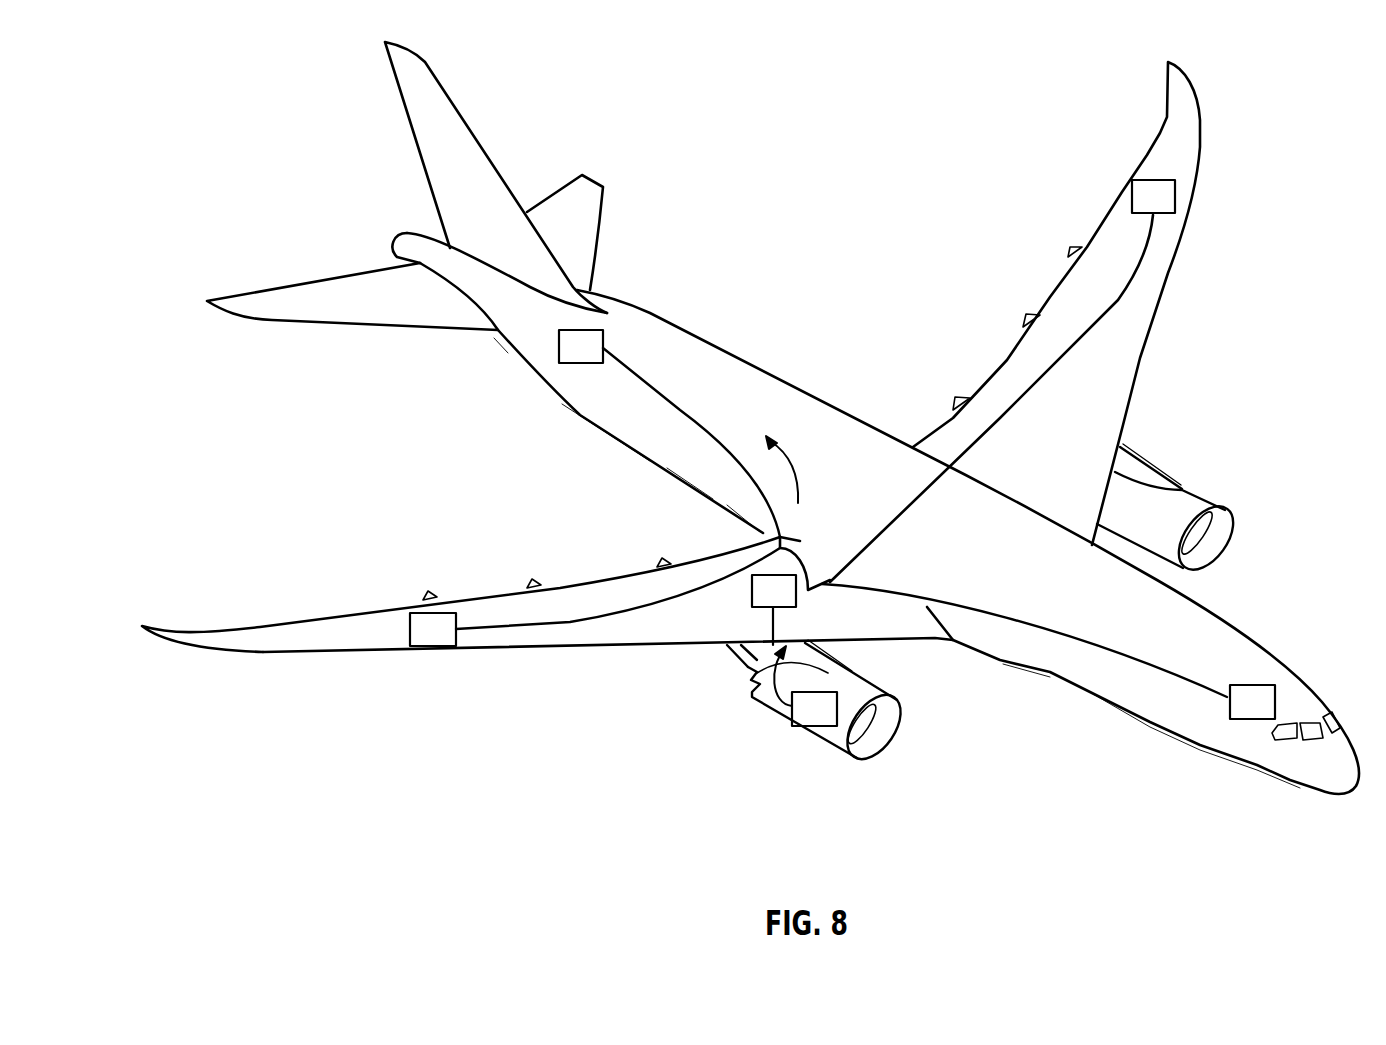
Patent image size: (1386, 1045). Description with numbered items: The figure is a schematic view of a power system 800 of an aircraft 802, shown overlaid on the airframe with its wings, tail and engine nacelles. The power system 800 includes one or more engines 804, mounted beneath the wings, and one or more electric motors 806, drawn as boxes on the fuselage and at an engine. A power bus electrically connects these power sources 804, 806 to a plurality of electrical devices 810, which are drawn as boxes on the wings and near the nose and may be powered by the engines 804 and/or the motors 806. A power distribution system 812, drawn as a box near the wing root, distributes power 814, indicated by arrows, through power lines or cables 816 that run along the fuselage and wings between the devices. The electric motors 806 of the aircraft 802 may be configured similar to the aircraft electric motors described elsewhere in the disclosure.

The power system 800 is at (750, 447).
The aircraft 802 is at (1058, 676).
The engines 804 is at (840, 750).
The electric motors 806 is at (580, 363).
The electrical devices 810 is at (1132, 195).
The power distribution system 812 is at (752, 592).
The power 814 is at (797, 468).
The power lines or cables 816 is at (698, 418).